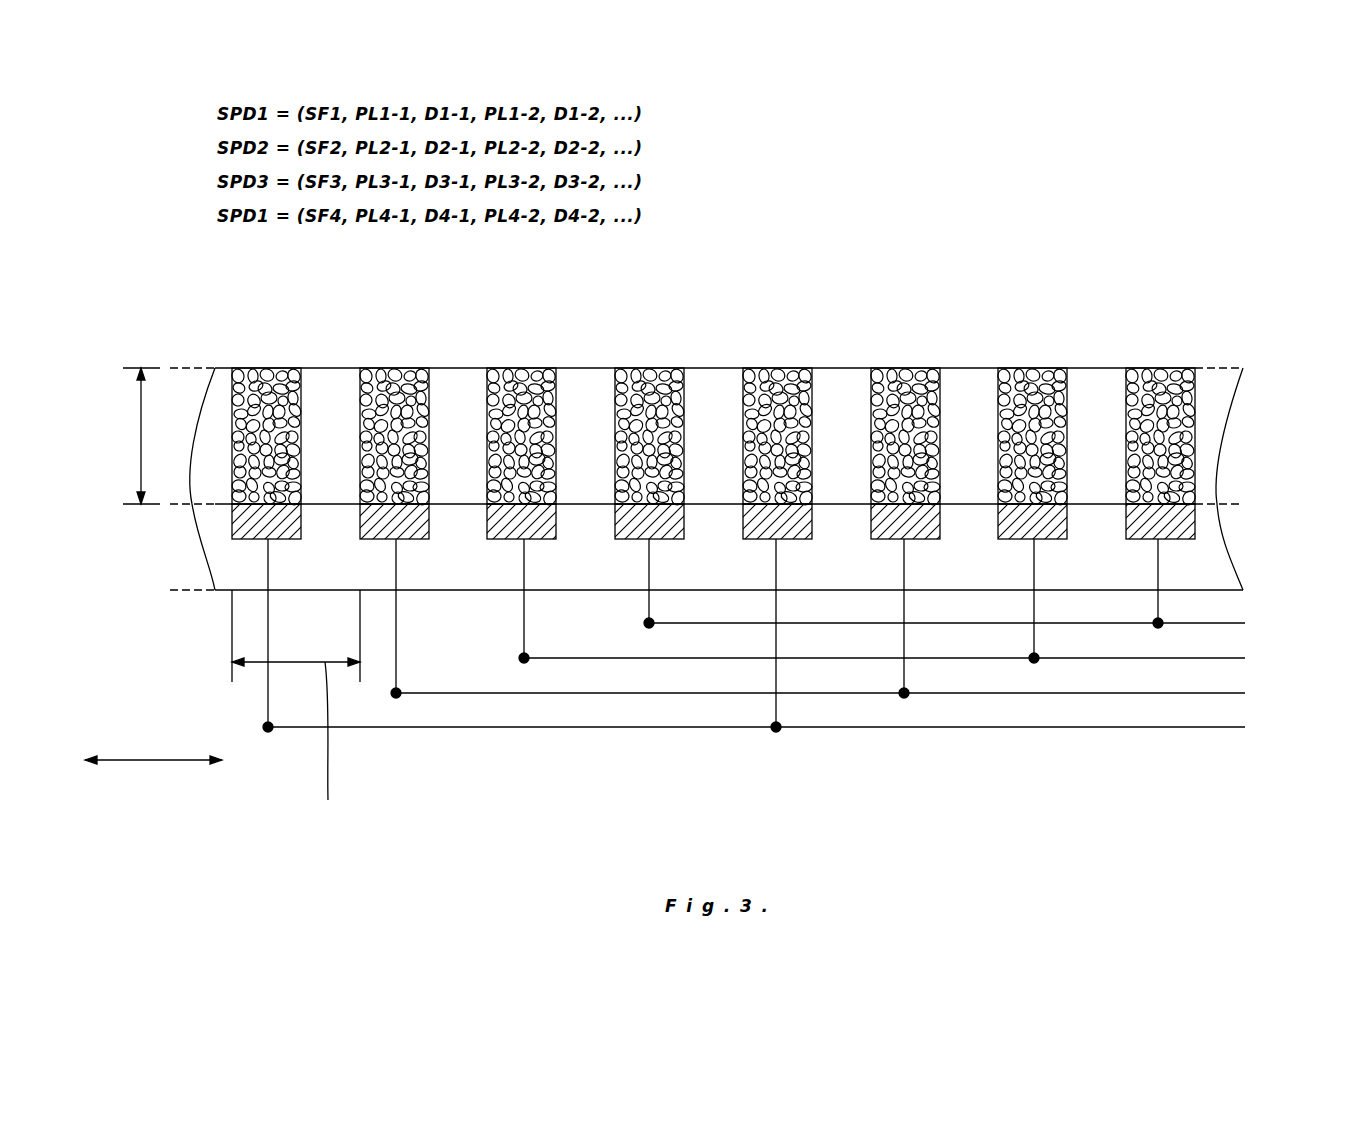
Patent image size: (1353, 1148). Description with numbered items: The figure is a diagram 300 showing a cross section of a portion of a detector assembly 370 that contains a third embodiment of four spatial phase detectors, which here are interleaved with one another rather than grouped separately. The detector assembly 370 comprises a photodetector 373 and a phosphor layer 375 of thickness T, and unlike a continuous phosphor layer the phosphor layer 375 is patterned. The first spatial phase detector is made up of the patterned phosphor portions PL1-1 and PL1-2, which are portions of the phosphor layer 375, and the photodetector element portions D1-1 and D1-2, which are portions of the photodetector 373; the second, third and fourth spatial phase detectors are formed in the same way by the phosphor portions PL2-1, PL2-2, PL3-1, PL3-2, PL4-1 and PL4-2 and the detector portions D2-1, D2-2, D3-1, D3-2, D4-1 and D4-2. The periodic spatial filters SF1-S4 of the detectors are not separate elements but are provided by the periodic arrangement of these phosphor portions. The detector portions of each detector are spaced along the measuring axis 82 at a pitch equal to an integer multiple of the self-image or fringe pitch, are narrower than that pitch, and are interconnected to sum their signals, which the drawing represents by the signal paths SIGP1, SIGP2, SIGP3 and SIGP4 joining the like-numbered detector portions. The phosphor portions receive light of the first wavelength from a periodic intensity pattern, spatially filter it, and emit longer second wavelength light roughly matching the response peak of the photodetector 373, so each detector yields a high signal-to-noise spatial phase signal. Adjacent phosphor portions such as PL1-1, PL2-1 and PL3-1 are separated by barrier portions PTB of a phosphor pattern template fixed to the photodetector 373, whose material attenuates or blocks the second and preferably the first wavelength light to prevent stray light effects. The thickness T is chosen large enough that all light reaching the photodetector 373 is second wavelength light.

The diagram 300 is at (1168, 141).
The detector assembly 370 is at (1138, 218).
The phosphor layer 375 is at (1250, 368).
The photodetector 373 is at (1250, 504).
The measuring axis 82 is at (168, 760).
The thickness of the phosphor layer T is at (141, 420).
The barrier portions PTB is at (326, 368).
The patterned phosphor layer portion PL1-1 is at (288, 368).
The patterned phosphor layer portion PL2-1 is at (416, 368).
The patterned phosphor layer portion PL3-1 is at (543, 368).
The patterned phosphor layer portion PL4-1 is at (671, 368).
The patterned phosphor layer portion PL1-2 is at (799, 368).
The patterned phosphor layer portion PL2-2 is at (927, 368).
The patterned phosphor layer portion PL3-2 is at (1054, 368).
The patterned phosphor layer portion PL4-2 is at (1182, 368).
The photodetector element portion D1-1 is at (256, 540).
The photodetector element portion D2-1 is at (384, 540).
The photodetector element portion D3-1 is at (511, 540).
The photodetector element portion D4-1 is at (639, 540).
The photodetector element portion D1-2 is at (767, 540).
The photodetector element portion D2-2 is at (895, 540).
The photodetector element portion D3-2 is at (1022, 540).
The photodetector element portion D4-2 is at (1150, 540).
The signal path SIGP1 is at (795, 728).
The signal path SIGP2 is at (859, 694).
The signal path SIGP3 is at (923, 660).
The signal path SIGP4 is at (985, 626).
The spatial filters SF1-S4 is at (1213, 302).